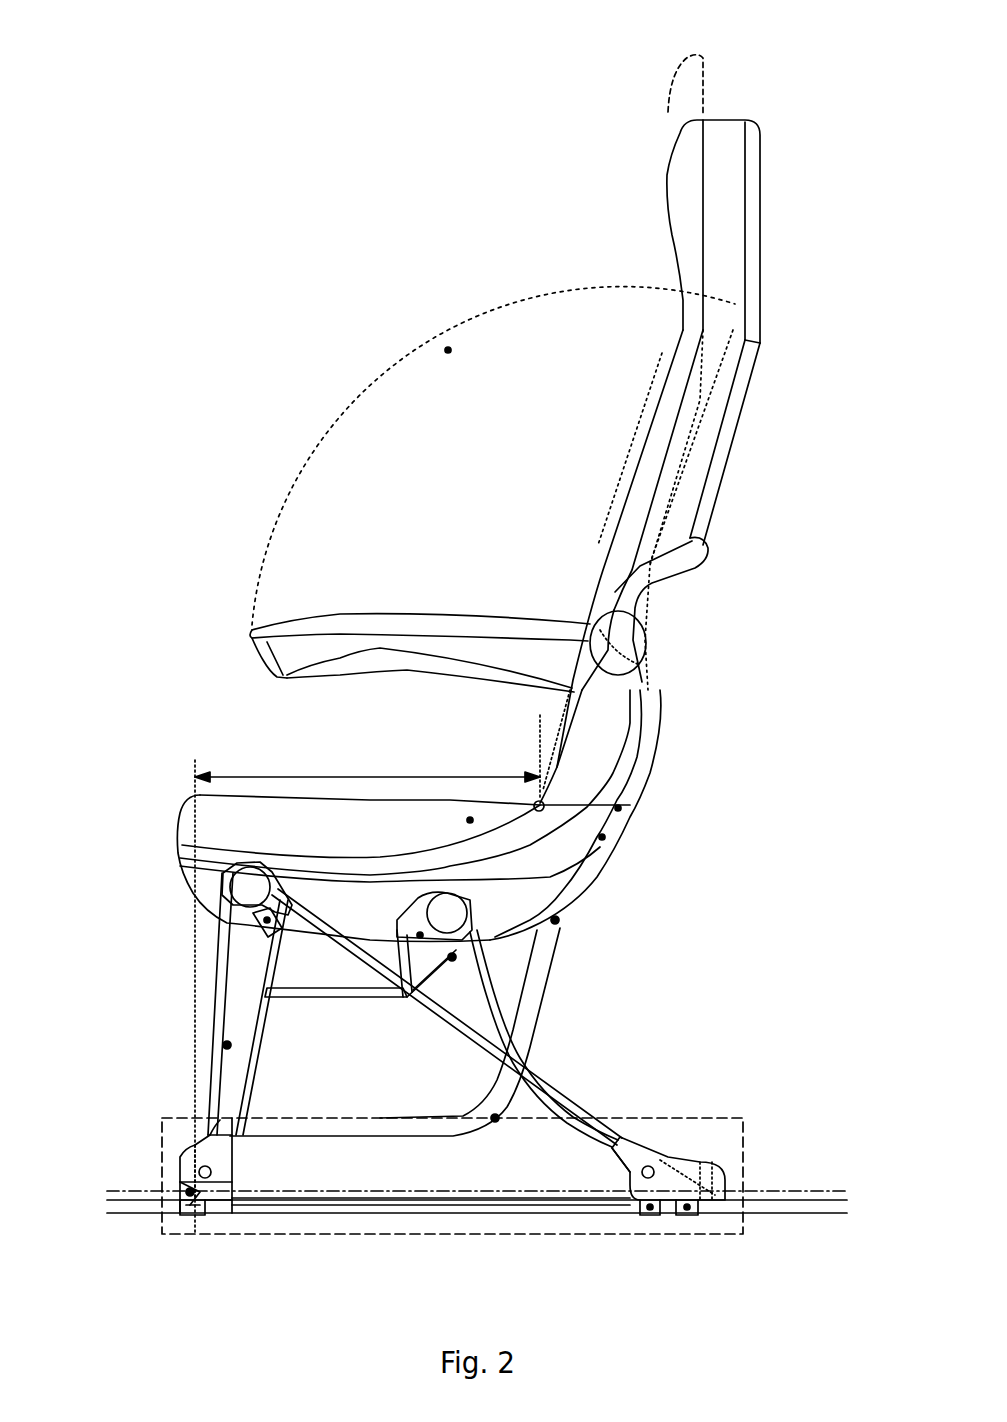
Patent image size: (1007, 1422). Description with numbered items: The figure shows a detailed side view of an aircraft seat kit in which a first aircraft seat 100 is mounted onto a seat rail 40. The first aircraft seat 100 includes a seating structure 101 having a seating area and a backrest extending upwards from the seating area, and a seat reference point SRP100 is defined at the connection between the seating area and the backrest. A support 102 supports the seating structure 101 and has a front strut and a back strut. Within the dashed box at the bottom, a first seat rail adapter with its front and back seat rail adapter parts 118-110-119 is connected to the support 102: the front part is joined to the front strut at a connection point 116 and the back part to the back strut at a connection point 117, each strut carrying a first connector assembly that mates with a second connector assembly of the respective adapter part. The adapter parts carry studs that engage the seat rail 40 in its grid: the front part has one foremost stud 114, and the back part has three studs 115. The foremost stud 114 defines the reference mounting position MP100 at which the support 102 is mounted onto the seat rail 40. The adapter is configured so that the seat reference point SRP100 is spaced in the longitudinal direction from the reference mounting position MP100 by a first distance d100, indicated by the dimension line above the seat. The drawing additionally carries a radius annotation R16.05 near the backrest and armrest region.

The first aircraft seat 100 is at (611, 66).
The seating structure 101 is at (605, 724).
The support 102 is at (218, 962).
The stud 114 is at (195, 1212).
The studs 115 is at (695, 1212).
The connection point 116 is at (200, 1148).
The connection point 117 is at (650, 1165).
The first seat rail adapter with front and back seat rail adapter parts 118-110-119 is at (600, 1205).
The seat rail 40 is at (806, 1214).
The seat reference point SRP100 is at (550, 820).
The reference mounting position MP100 is at (200, 1176).
The first distance d100 is at (355, 768).
The armrest swing radius R16.05 is at (623, 657).